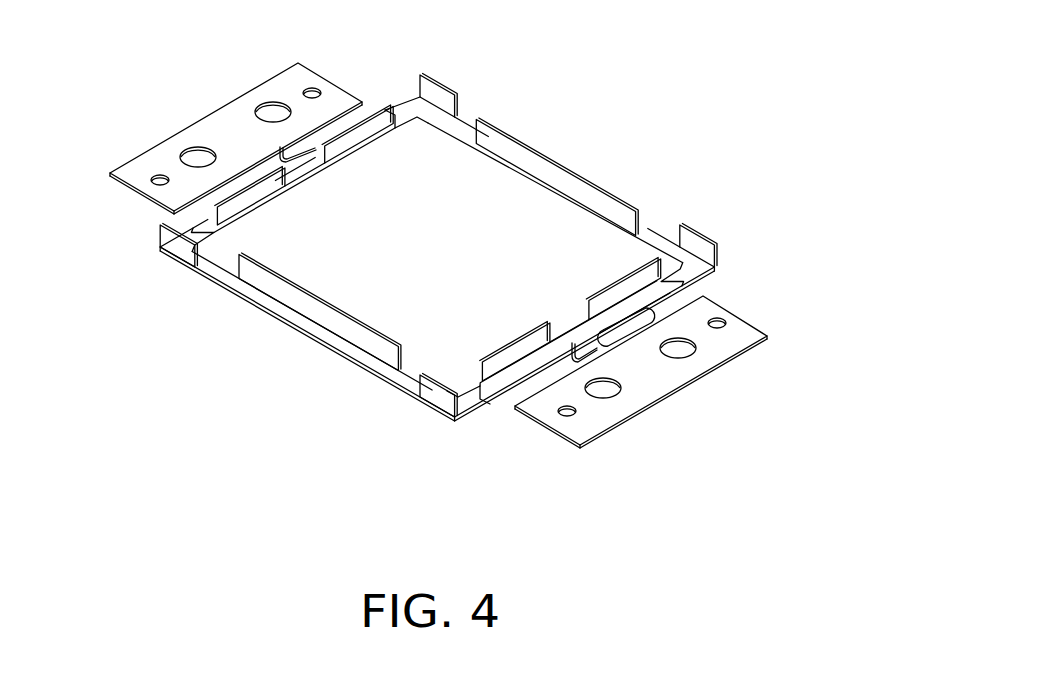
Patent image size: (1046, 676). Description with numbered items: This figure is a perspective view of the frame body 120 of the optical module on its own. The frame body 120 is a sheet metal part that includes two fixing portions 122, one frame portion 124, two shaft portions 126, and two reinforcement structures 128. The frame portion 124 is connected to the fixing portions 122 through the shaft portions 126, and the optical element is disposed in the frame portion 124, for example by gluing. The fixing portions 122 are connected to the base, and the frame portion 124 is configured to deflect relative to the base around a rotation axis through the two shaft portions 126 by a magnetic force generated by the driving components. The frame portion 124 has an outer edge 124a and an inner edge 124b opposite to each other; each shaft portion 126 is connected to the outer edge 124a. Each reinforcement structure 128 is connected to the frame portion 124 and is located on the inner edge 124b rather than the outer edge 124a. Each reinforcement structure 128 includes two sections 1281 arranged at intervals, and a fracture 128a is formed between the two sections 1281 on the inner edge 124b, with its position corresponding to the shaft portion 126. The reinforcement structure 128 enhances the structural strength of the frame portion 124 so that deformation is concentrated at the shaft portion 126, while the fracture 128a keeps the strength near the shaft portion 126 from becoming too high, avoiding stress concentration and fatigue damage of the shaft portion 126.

The frame body 120 is at (690, 403).
The fixing portion 122 is at (162, 160).
The frame portion 124 is at (443, 258).
The outer edge 124a is at (647, 312).
The inner edge 124b is at (580, 322).
The shaft portion 126 is at (282, 157).
The reinforcement structure 128 is at (791, 38).
The section 1281 is at (526, 332).
The fracture 128a is at (317, 168).